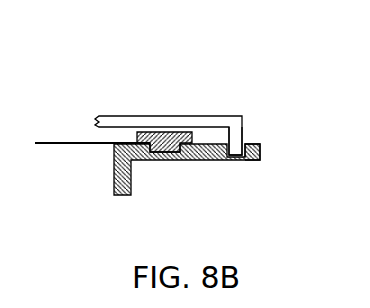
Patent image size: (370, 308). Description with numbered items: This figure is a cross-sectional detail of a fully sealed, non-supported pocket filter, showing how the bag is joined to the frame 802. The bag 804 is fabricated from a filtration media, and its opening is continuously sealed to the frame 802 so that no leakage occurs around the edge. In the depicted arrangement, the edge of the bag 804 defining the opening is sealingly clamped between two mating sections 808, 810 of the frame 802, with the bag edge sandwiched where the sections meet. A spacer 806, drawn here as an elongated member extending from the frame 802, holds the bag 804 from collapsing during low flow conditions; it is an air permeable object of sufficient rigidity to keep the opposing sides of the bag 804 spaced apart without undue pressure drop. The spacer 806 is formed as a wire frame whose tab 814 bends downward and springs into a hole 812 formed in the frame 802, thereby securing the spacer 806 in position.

The frame 802 is at (283, 146).
The bag 804 is at (64, 144).
The spacer 806 is at (202, 118).
The mating section of the frame 808 is at (208, 161).
The mating section of the frame 810 is at (162, 143).
The hole 812 is at (262, 153).
The tab 814 is at (238, 133).